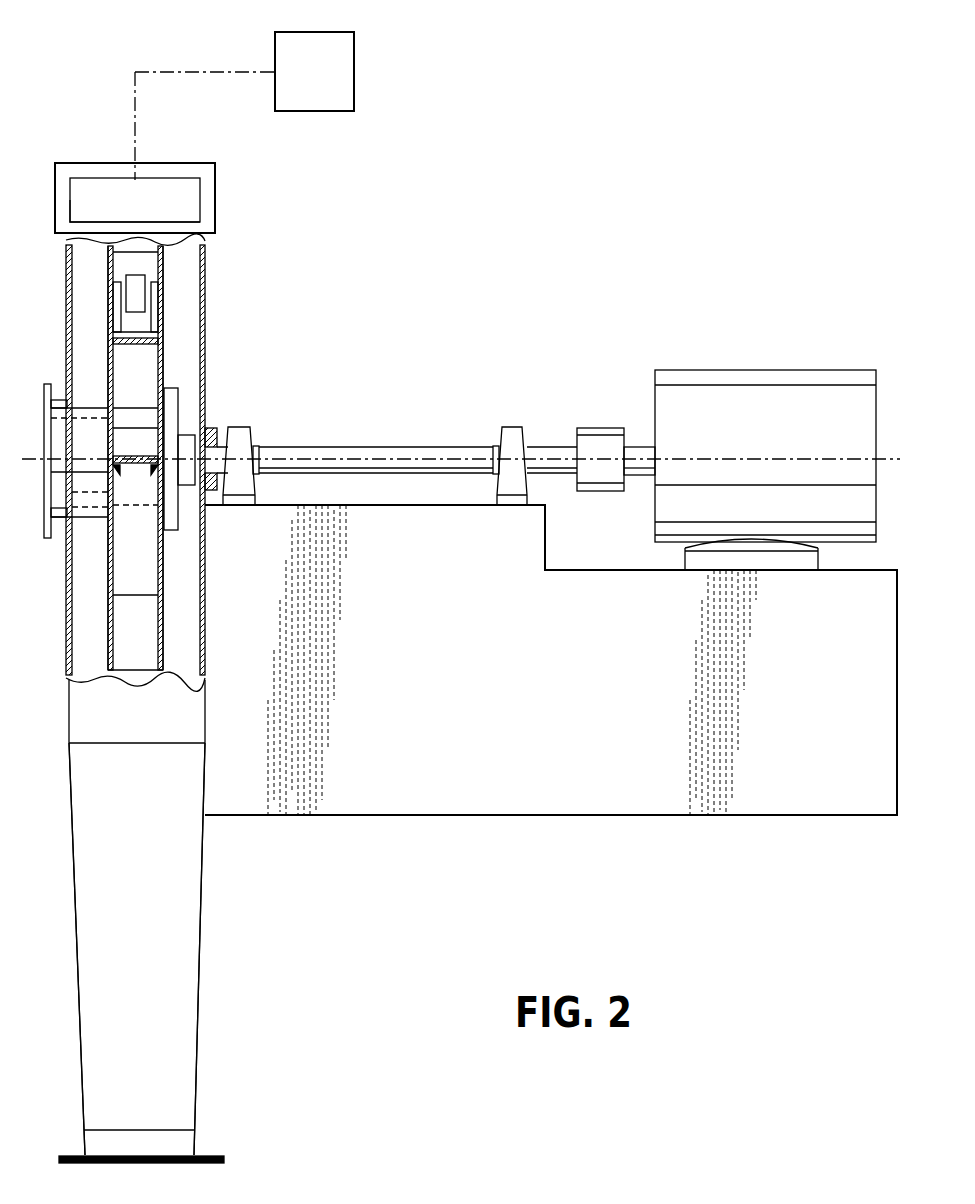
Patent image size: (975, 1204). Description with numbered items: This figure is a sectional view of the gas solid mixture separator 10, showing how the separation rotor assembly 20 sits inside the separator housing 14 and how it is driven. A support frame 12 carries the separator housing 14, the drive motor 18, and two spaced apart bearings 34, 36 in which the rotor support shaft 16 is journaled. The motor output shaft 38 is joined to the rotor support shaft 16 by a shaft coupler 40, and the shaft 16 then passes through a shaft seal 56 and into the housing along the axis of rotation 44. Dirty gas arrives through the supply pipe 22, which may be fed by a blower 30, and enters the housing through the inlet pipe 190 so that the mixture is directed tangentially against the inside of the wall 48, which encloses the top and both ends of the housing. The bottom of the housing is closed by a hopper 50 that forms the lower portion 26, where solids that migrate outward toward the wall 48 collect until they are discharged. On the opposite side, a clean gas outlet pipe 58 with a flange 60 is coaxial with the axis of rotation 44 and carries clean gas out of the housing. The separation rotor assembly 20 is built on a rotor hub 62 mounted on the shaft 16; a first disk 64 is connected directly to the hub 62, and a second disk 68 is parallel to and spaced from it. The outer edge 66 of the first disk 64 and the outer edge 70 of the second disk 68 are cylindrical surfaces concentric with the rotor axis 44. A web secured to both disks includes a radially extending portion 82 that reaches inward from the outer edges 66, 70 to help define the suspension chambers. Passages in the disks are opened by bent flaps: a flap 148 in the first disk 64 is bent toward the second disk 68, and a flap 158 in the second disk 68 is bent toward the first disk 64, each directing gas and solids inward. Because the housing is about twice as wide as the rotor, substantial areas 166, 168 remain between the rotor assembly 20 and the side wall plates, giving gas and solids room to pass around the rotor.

The gas solid mixture separator 10 is at (366, 204).
The support frame 12 is at (615, 818).
The separator housing 14 is at (206, 870).
The rotor support shaft 16 is at (387, 446).
The drive motor 18 is at (757, 370).
The separation rotor assembly 20 is at (97, 588).
The supply pipe 22 is at (228, 70).
The lower portion 26 is at (78, 1000).
The blower 30 is at (275, 95).
The bearing 34 is at (498, 430).
The bearing 36 is at (255, 432).
The motor output shaft 38 is at (640, 447).
The shaft coupler 40 is at (600, 428).
The axis of rotation 44 is at (340, 458).
The wall 48 is at (80, 710).
The hopper 50 is at (200, 1020).
The shaft seal 56 is at (212, 492).
The clean gas outlet pipe 58 is at (60, 395).
The flange 60 is at (48, 410).
The rotor hub 62 is at (178, 425).
The first disk 64 is at (162, 372).
The outer edge 66 is at (160, 240).
The second disk 68 is at (107, 545).
The outer edge 70 is at (110, 243).
The radially extending portion 82 is at (148, 262).
The flap 148 is at (156, 302).
The flap 158 is at (117, 277).
The area 166 is at (187, 578).
The area 168 is at (80, 266).
The inlet pipe 190 is at (113, 186).